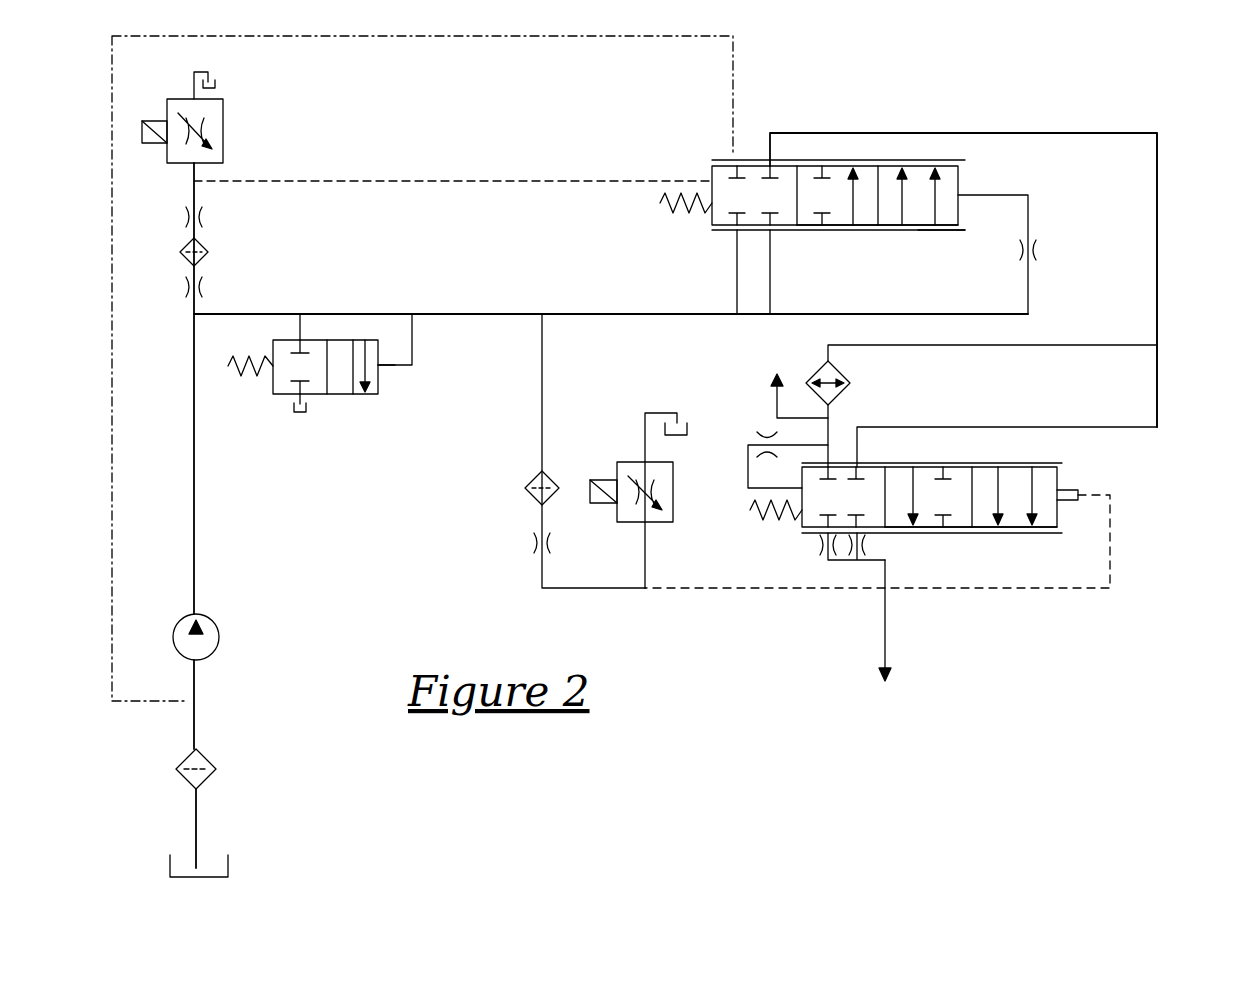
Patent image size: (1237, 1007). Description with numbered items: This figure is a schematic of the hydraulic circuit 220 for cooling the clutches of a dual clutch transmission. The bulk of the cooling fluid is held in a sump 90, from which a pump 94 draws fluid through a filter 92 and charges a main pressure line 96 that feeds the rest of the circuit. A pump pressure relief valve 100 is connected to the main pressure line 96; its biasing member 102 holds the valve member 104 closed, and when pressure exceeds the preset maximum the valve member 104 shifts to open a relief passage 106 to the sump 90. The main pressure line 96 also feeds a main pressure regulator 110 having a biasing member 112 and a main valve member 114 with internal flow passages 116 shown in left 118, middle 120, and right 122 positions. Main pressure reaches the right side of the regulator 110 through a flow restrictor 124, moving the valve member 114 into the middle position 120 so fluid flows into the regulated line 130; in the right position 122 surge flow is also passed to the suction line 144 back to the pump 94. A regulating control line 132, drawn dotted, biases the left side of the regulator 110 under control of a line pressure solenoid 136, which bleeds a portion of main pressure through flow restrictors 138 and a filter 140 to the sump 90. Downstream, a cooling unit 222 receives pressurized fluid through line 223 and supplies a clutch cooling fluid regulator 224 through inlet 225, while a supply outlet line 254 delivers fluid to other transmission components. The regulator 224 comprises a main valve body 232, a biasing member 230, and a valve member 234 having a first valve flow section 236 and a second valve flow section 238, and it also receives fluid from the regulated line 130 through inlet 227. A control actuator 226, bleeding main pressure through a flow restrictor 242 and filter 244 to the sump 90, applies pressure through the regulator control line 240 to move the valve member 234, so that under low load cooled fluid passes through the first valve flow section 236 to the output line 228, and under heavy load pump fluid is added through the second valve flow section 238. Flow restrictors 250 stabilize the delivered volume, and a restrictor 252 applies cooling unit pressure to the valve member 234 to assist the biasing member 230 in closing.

The hydraulic circuit 220 is at (983, 104).
The suction line 144 is at (690, 42).
The regulating control line 132 is at (490, 181).
The main pressure line 96 is at (448, 314).
The sump 90 is at (218, 85).
The line pressure solenoid 136 is at (223, 137).
The flow restrictors 138 is at (204, 291).
The filter 140 is at (206, 246).
The pump pressure relief valve 100 is at (378, 394).
The relief passage 106 is at (305, 331).
The biasing member 102 is at (228, 370).
The valve member 104 is at (376, 370).
The pump 94 is at (218, 632).
The filter 92 is at (186, 766).
The main pressure regulator 110 is at (794, 160).
The biasing member 112 is at (680, 212).
The main valve member 114 is at (958, 191).
The left position 118 is at (780, 220).
The middle position 120 is at (842, 230).
The right position 122 is at (908, 228).
The internal flow passages 116 is at (946, 233).
The flow restrictor 124 is at (1038, 255).
The regulated line 130 is at (1160, 240).
The line 223 is at (1010, 350).
The cooling unit 222 is at (852, 378).
The inlet 225 is at (832, 430).
The supply outlet line 254 is at (777, 394).
The restrictor 252 is at (768, 438).
The inlet 227 is at (895, 428).
The main valve body 232 is at (920, 467).
The biasing member 230 is at (787, 522).
The valve member 234 is at (1056, 486).
The clutch cooling fluid regulator 224 is at (1085, 481).
The first valve flow section 236 is at (926, 532).
The second valve flow section 238 is at (1014, 532).
The flow restrictors 250 is at (868, 547).
The output line 228 is at (886, 644).
The regulator control line 240 is at (682, 592).
The filter 244 is at (532, 492).
The flow restrictor 242 is at (535, 545).
The control actuator 226 is at (658, 524).